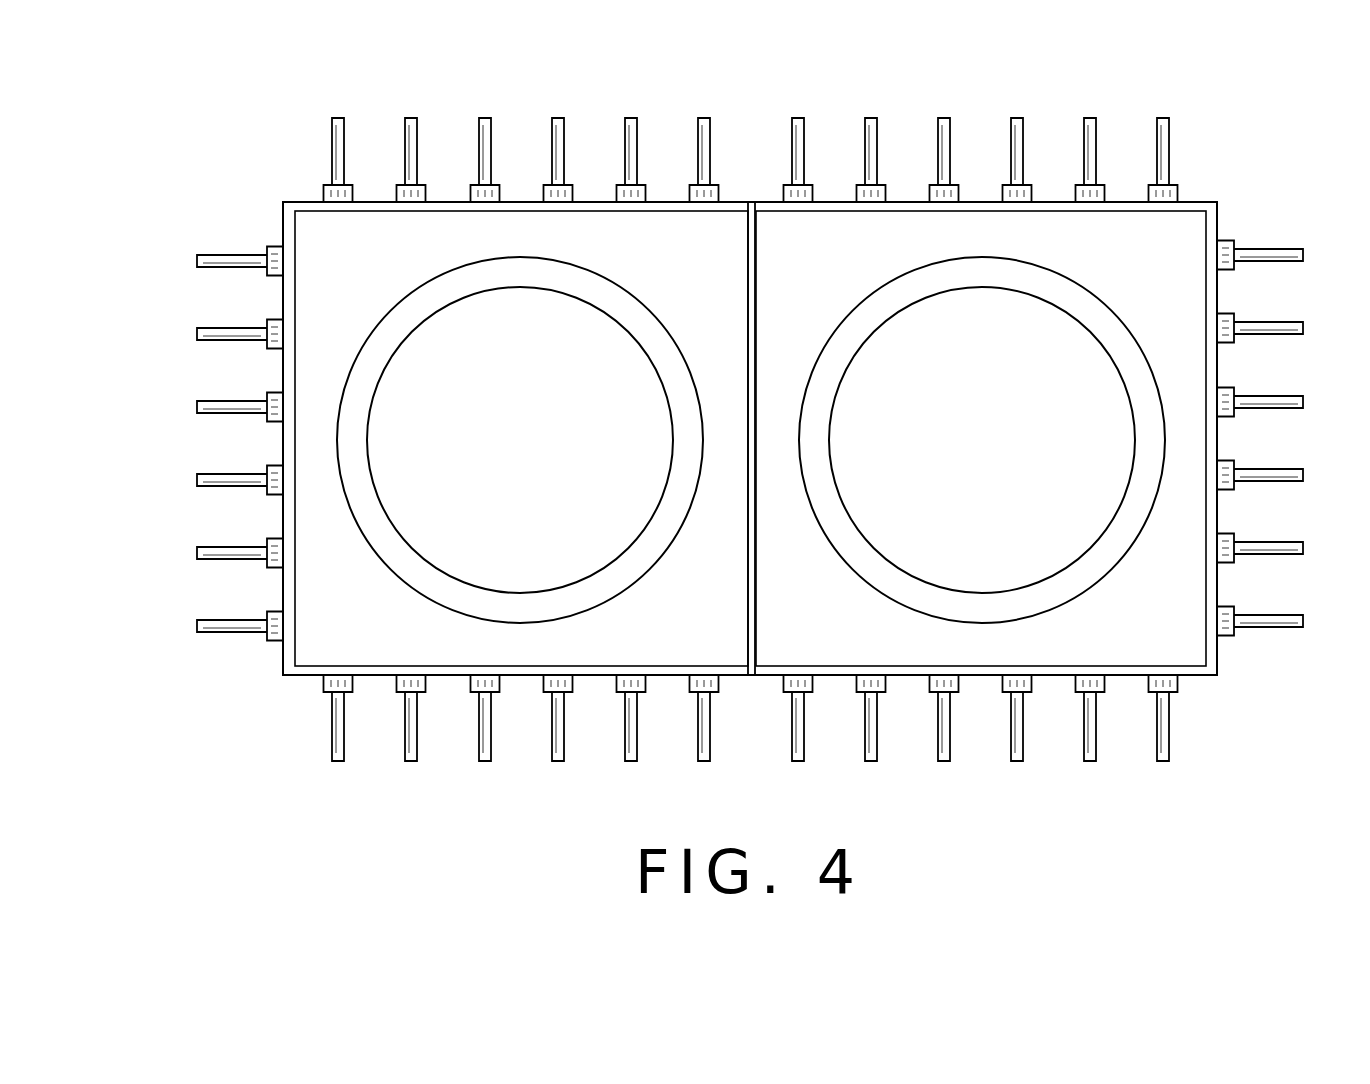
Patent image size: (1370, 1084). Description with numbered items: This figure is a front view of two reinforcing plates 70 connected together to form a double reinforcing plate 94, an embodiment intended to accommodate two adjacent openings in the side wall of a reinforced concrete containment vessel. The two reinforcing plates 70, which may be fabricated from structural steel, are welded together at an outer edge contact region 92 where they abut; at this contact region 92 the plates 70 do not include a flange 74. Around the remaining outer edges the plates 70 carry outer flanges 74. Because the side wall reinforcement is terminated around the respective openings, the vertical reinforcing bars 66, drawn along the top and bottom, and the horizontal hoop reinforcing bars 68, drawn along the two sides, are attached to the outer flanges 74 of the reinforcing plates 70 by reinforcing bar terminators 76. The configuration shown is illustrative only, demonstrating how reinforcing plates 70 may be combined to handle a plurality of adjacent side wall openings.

The double reinforcing plate 94 is at (1242, 178).
The reinforcing plate 70 is at (342, 263).
The outer edge contact region 92 is at (758, 285).
The outer flange 74 is at (520, 200).
The reinforcing bar terminator 76 is at (570, 185).
The vertical reinforcing bar 66 is at (418, 140).
The horizontal hoop reinforcing bar 68 is at (210, 400).